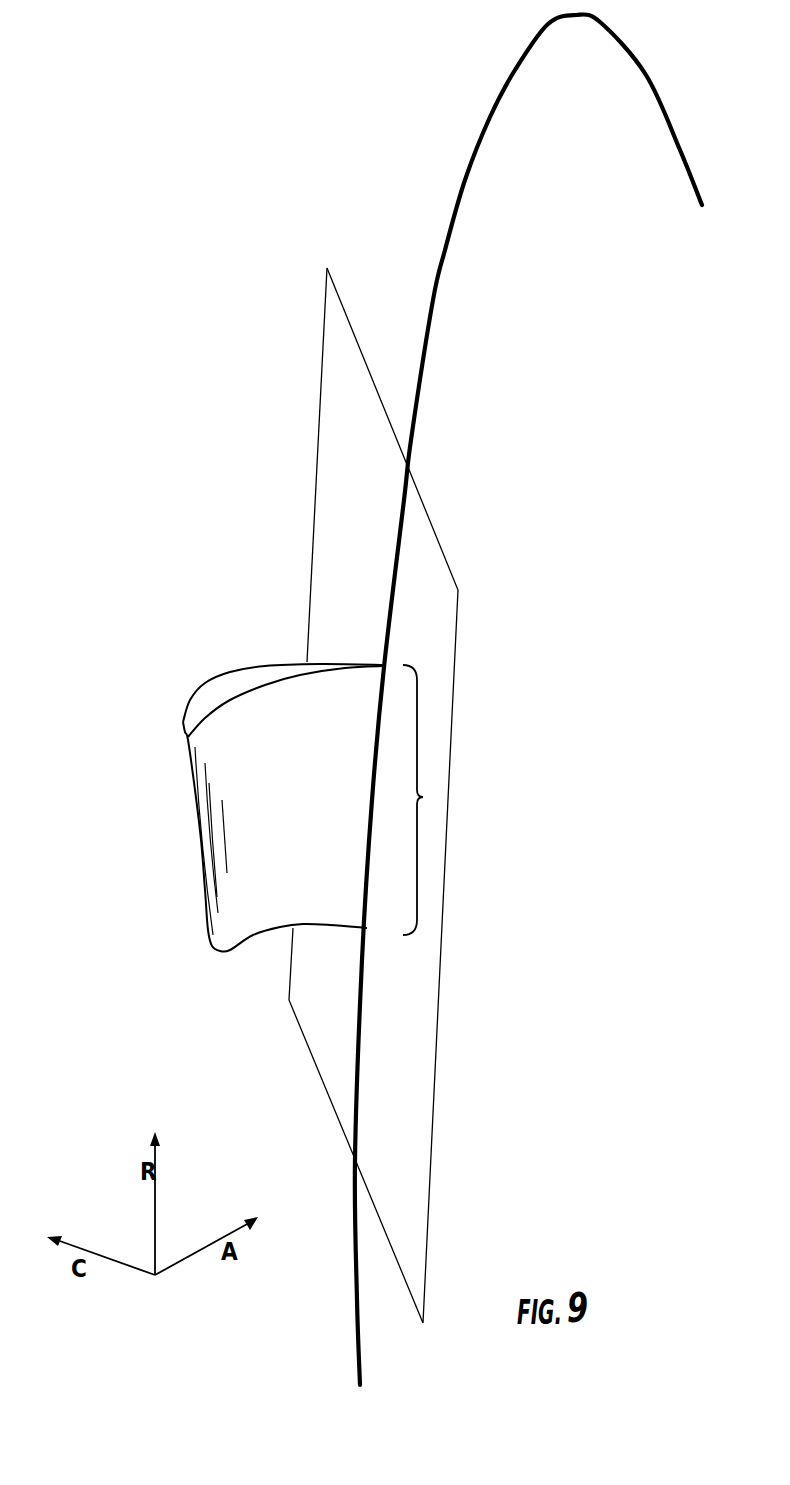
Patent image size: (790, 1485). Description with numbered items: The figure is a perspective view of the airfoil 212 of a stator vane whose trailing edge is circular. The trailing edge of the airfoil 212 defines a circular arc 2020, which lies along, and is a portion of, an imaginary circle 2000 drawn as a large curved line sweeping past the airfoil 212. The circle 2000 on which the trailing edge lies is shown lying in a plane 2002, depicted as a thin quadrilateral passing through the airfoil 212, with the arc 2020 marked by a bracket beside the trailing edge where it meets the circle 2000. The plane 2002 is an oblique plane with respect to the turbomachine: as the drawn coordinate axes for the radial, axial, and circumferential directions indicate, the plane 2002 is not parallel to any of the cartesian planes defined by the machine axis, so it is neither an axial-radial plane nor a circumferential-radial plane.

The imaginary circle 2000 is at (491, 118).
The plane 2002 is at (318, 425).
The airfoil 212 is at (146, 727).
The circular arc 2020 is at (423, 797).